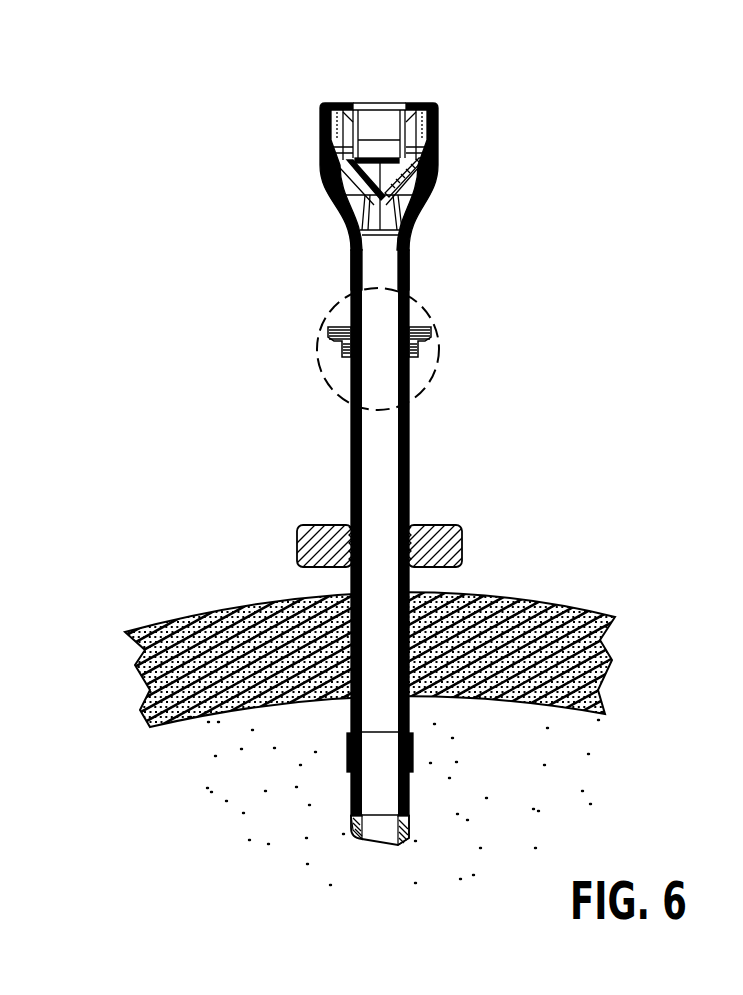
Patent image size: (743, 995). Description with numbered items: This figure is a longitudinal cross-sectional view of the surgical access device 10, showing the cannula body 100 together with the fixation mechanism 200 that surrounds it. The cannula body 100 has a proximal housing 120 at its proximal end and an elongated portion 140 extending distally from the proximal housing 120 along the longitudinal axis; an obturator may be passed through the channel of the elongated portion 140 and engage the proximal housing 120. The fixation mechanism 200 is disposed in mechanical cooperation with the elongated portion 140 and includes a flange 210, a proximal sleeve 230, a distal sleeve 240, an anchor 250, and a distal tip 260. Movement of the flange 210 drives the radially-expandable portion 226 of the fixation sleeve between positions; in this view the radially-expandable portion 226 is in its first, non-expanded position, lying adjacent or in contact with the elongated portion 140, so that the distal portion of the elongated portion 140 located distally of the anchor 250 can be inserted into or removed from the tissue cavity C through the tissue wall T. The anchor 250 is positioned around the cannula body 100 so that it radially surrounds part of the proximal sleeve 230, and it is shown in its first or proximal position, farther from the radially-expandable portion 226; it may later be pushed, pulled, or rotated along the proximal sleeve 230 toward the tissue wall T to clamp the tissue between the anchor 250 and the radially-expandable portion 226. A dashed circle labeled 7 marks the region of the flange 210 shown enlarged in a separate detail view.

The surgical access device 10 is at (300, 108).
The cannula body 100 is at (430, 245).
The proximal housing 120 is at (440, 158).
The elongated portion 140 is at (409, 290).
The fixation mechanism 200 is at (437, 398).
The flange 210 is at (330, 335).
The radially-expandable portion 226 is at (413, 752).
The proximal sleeve 230 is at (351, 480).
The distal sleeve 240 is at (350, 793).
The anchor 250 is at (462, 539).
The distal tip 260 is at (405, 840).
The detail region shown in FIG. 7 is at (322, 385).
The tissue wall T is at (575, 610).
The tissue cavity C is at (515, 828).